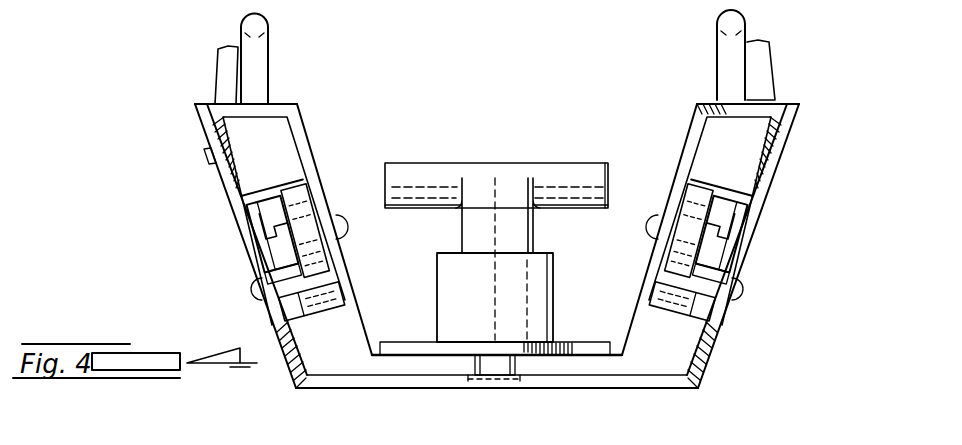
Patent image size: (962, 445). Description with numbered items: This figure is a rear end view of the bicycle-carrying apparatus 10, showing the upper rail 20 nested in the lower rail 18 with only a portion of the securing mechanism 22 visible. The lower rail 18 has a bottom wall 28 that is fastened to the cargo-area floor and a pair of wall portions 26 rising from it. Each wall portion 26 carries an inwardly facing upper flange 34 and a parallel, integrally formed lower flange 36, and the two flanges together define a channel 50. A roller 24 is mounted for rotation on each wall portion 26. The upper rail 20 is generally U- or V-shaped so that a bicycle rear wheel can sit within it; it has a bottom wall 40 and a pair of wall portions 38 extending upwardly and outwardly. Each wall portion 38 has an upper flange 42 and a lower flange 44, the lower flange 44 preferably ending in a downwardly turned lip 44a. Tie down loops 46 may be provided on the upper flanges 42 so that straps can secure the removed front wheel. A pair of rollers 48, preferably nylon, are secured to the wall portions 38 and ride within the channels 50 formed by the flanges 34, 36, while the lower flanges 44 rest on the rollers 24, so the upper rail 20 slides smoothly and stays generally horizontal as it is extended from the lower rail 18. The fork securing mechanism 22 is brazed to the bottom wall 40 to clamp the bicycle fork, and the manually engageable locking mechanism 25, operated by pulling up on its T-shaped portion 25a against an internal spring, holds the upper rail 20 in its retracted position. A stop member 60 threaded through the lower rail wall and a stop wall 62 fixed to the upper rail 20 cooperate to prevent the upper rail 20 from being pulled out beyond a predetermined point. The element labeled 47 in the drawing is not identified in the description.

The apparatus 10 is at (432, 219).
The lower rail 18 is at (455, 194).
The upper rail 20 is at (323, 127).
The fork securing mechanism 22 is at (452, 57).
The rollers 24 is at (300, 303).
The locking mechanism 25 is at (496, 222).
The T-shaped portion 25a is at (442, 172).
The wall portions 26 is at (243, 225).
The bottom wall 28 is at (430, 387).
The upper flanges 34 is at (268, 202).
The lower flanges 36 is at (296, 300).
The wall portions 38 is at (352, 255).
The bottom wall 40 is at (463, 352).
The upper flange 42 is at (230, 105).
The lower flange 44 is at (479, 208).
The downwardly turned lip 44a is at (273, 240).
The tie down loops 46 is at (262, 53).
The finger support 47 is at (211, 60).
The rollers 48 is at (296, 243).
The channels 50 is at (259, 271).
The stop member 60 is at (203, 158).
The stop wall 62 is at (243, 131).